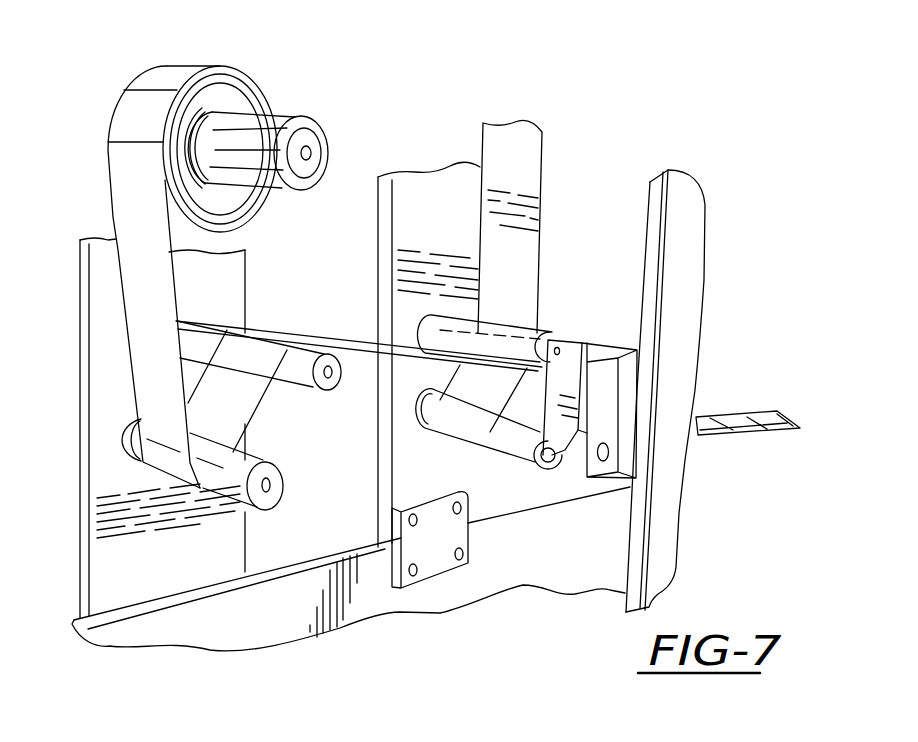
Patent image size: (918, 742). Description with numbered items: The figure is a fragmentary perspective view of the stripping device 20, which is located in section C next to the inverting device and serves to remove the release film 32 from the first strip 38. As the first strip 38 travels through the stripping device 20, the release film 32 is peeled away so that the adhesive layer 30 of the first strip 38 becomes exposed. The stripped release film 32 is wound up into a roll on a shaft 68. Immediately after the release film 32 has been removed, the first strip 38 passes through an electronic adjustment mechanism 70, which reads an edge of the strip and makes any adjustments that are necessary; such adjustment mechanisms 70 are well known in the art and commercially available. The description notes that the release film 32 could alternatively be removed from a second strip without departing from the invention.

The stripping device 20 is at (598, 110).
The adhesive layer 30 is at (419, 409).
The release film 32 is at (147, 110).
The first strip 38 is at (540, 207).
The shaft 68 is at (313, 145).
The electronic adjustment mechanism 70 is at (635, 350).